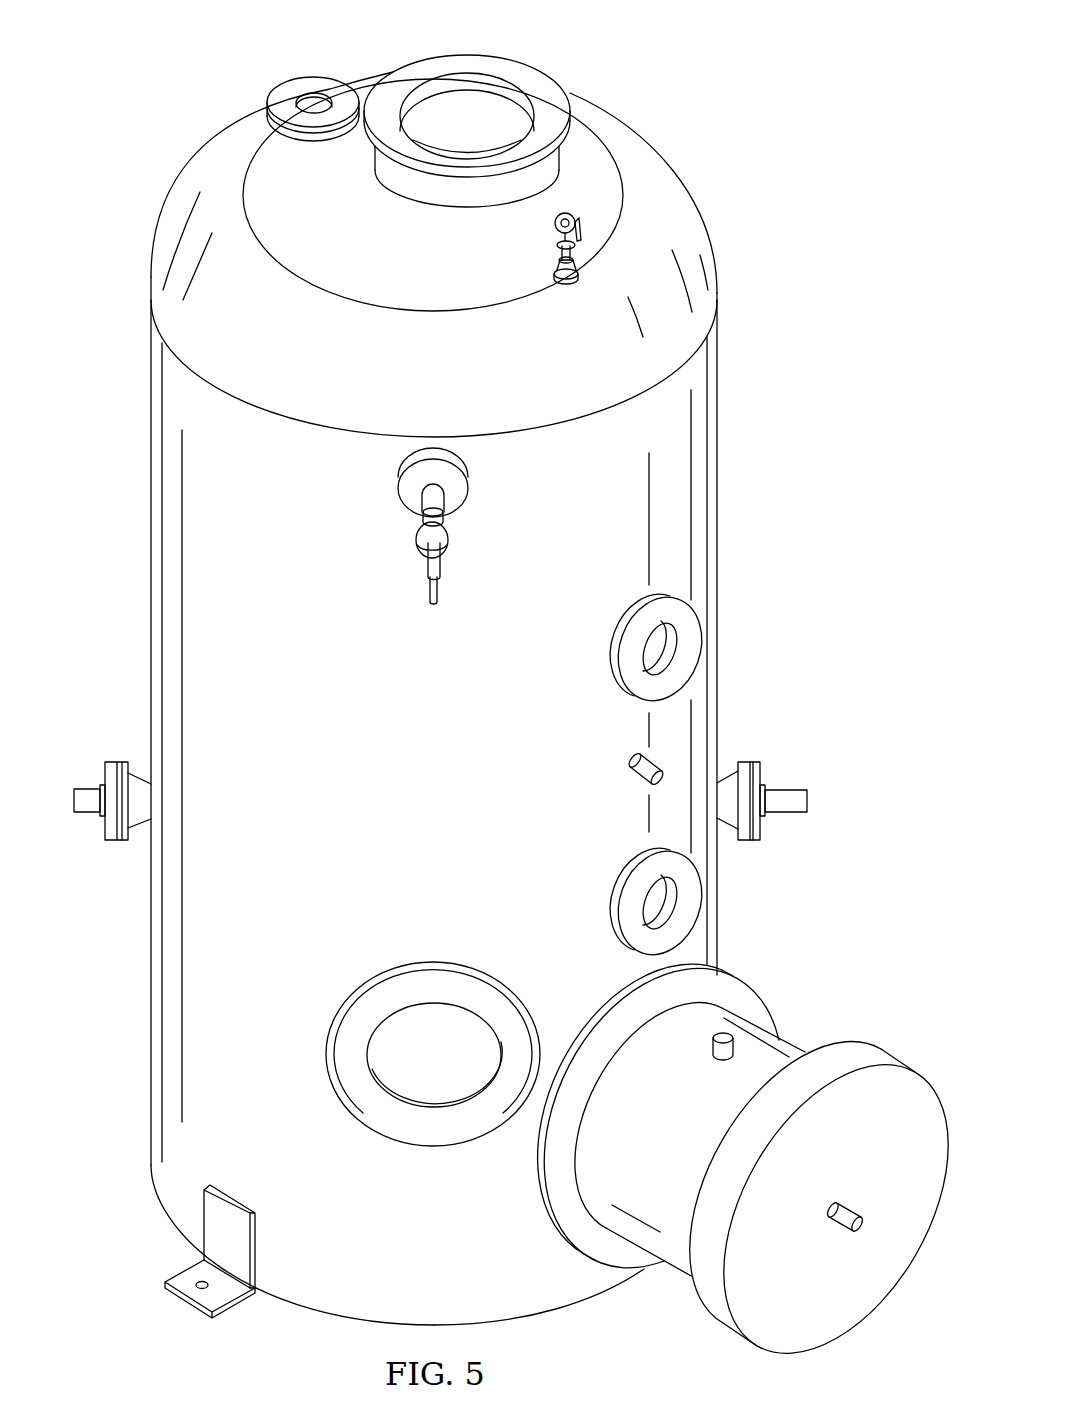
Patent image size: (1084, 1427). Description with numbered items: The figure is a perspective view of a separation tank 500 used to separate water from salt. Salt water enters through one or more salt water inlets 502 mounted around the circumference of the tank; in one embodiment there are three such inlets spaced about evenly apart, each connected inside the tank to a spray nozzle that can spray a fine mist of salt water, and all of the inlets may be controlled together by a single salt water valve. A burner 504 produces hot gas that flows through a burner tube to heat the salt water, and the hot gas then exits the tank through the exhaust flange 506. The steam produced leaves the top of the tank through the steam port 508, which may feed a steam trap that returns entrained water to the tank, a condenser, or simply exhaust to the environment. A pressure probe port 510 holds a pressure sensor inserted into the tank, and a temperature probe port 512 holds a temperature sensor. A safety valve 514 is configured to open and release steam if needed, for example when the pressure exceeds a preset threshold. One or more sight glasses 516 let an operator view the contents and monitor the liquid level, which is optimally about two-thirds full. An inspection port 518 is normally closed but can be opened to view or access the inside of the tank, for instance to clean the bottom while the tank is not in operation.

The separation tank 500 is at (685, 103).
The salt water inlet 502 is at (92, 815).
The burner 504 is at (873, 1300).
The exhaust flange 506 is at (413, 72).
The steam port 508 is at (298, 82).
The pressure probe port 510 is at (560, 233).
The temperature probe port 512 is at (636, 784).
The safety valve 514 is at (420, 546).
The sight glass 516 is at (612, 668).
The inspection port 518 is at (428, 1138).